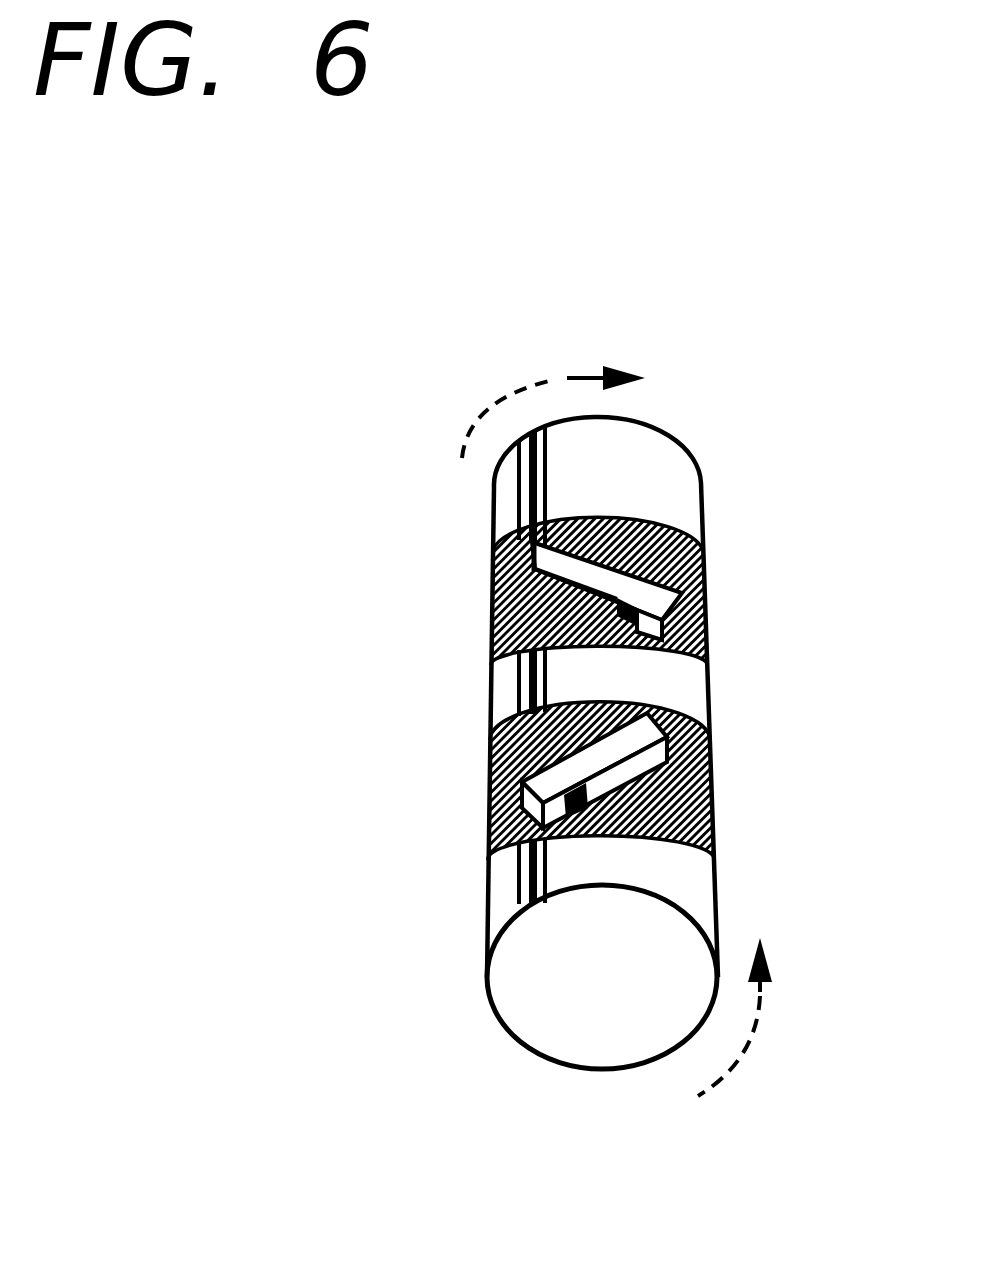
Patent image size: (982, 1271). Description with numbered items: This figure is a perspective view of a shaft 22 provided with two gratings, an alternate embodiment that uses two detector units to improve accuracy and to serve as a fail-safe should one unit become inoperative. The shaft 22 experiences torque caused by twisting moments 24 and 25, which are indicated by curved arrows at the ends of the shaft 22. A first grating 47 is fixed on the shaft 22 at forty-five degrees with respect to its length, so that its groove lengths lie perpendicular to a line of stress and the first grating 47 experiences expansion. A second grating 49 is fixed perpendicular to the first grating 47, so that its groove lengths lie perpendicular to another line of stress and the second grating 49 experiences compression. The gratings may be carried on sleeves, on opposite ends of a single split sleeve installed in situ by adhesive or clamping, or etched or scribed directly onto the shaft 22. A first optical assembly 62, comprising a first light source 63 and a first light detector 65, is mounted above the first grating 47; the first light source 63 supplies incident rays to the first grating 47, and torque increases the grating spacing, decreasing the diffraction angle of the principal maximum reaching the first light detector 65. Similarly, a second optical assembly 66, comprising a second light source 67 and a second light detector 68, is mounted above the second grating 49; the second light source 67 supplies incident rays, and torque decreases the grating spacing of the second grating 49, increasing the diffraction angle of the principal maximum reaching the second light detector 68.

The shaft 22 is at (630, 995).
The twisting moment 24 is at (750, 1024).
The twisting moment 25 is at (553, 390).
The first grating 47 is at (520, 780).
The second grating 49 is at (700, 646).
The first optical assembly 62 is at (611, 824).
The first light source 63 is at (525, 816).
The first light detector 65 is at (633, 766).
The second optical assembly 66 is at (589, 556).
The second light source 67 is at (668, 620).
The second light detector 68 is at (553, 571).